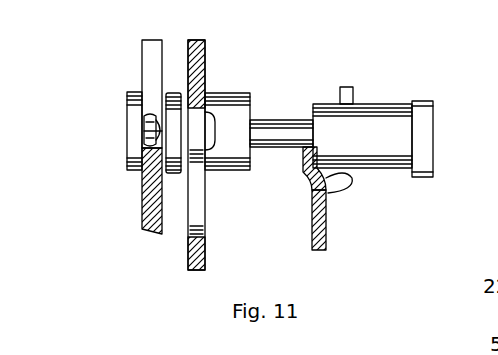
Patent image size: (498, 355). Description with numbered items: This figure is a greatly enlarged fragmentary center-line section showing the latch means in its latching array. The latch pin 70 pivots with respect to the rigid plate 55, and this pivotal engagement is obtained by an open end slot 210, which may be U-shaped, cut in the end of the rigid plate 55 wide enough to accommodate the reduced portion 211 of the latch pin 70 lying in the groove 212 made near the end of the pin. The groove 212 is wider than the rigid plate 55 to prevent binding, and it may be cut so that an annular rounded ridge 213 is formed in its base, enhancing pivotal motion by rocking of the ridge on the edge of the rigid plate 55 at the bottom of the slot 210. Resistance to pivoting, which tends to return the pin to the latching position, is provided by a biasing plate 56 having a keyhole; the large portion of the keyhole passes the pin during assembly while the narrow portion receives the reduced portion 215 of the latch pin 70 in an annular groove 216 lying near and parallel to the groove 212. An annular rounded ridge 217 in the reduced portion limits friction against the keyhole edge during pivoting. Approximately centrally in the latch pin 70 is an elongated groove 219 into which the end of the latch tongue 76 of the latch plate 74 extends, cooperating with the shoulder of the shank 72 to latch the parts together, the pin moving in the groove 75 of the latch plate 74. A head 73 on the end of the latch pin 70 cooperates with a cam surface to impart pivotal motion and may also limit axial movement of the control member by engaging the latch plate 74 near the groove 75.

The open end slot 210 is at (150, 52).
The rigid plate 55 is at (148, 186).
The groove 212 is at (152, 97).
The reduced portion 211 is at (145, 125).
The annular rounded ridge 213 is at (150, 138).
The reduced portion 215 is at (182, 97).
The annular groove 216 is at (181, 168).
The biasing plate 56 is at (200, 262).
The annular rounded ridge 217 is at (215, 103).
The elongated groove 219 is at (281, 122).
The latch pin 70 is at (268, 90).
The shank 72 is at (363, 150).
The head 73 is at (424, 118).
The groove 75 is at (350, 95).
The latch tongue 76 is at (305, 170).
The latch plate 74 is at (320, 238).